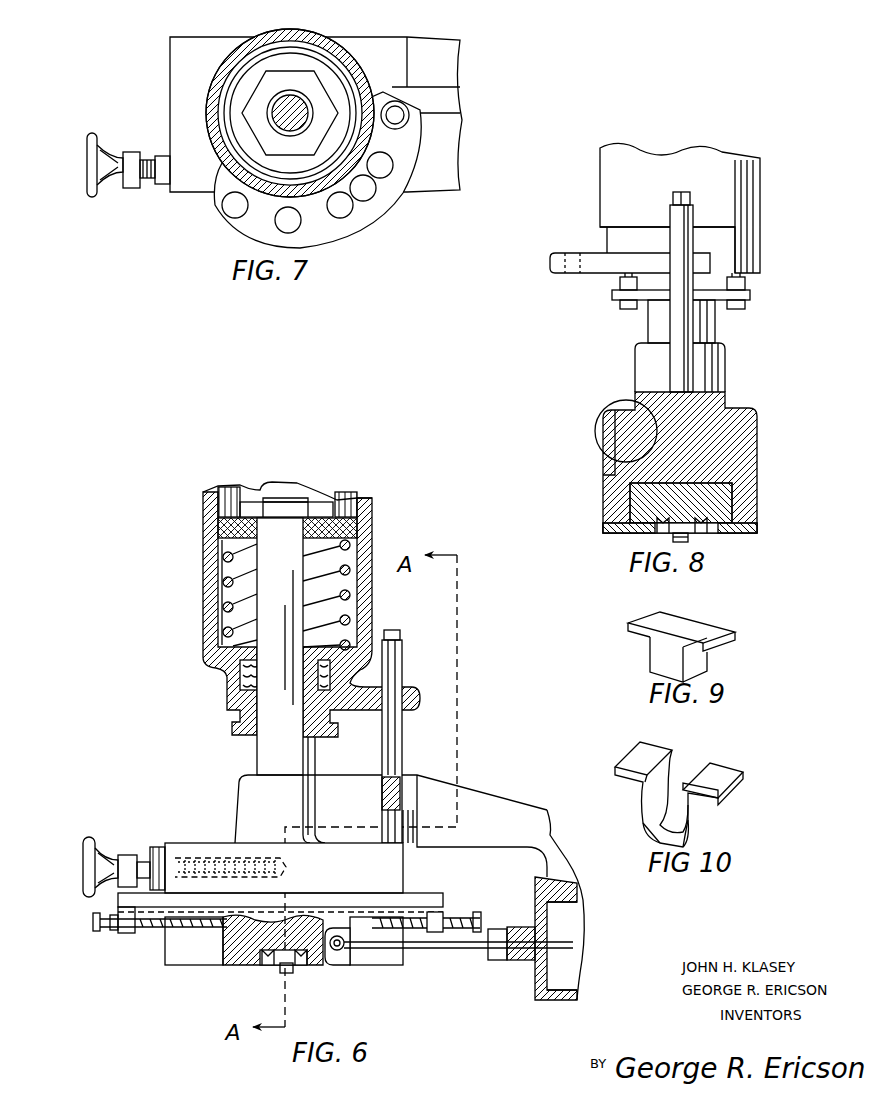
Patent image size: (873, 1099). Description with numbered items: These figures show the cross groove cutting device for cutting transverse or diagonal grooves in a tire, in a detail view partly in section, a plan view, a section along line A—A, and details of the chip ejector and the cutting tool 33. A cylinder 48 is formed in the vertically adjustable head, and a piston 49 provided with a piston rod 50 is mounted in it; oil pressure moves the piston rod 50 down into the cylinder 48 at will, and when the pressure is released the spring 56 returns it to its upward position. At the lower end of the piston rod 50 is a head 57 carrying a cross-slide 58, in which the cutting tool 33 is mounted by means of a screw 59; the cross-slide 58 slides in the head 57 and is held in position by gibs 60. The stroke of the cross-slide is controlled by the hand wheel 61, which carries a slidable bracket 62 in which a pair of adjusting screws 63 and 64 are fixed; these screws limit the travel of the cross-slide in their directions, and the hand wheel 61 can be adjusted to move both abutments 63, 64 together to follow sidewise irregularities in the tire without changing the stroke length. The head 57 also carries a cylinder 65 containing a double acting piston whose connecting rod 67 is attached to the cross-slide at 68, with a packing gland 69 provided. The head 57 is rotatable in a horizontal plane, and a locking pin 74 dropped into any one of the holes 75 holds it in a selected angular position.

In FIG. 8, the cutting tool 33 is at (689, 538).
In FIG. 10, the cutting tool 33 is at (743, 772).
In FIG. 6, the cutting tool 33 is at (282, 972).
In FIG. 8, the cylinder 48 is at (747, 202).
In FIG. 6, the cylinder 48 is at (368, 537).
In FIG. 6, the piston 49 is at (223, 525).
In FIG. 6, the piston rod 50 is at (260, 746).
In FIG. 6, the spring 56 is at (222, 607).
In FIG. 6, the head 57 is at (237, 848).
In FIG. 8, the cross-slide 58 is at (722, 512).
In FIG. 6, the cross-slide 58 is at (240, 963).
In FIG. 8, the screw 59 is at (663, 533).
In FIG. 6, the screw 59 is at (303, 967).
In FIG. 8, the gibs 60 is at (603, 530).
In FIG. 7, the hand wheel 61 is at (94, 200).
In FIG. 8, the hand wheel 61 is at (595, 431).
In FIG. 6, the hand wheel 61 is at (93, 836).
In FIG. 7, the slidable bracket 62 is at (134, 181).
In FIG. 6, the slidable bracket 62 is at (128, 855).
In FIG. 6, the adjusting screw 63 is at (95, 931).
In FIG. 6, the adjusting screw 64 is at (481, 916).
In FIG. 6, the cylinder 65 is at (553, 998).
In FIG. 6, the connecting rod 67 is at (473, 949).
In FIG. 6, the attachment point 68 is at (338, 951).
In FIG. 6, the packing gland 69 is at (494, 961).
In FIG. 7, the locking pin 74 is at (399, 111).
In FIG. 8, the locking pin 74 is at (672, 215).
In FIG. 6, the locking pin 74 is at (403, 668).
In FIG. 7, the holes 75 is at (366, 193).
In FIG. 8, the holes 75 is at (582, 268).